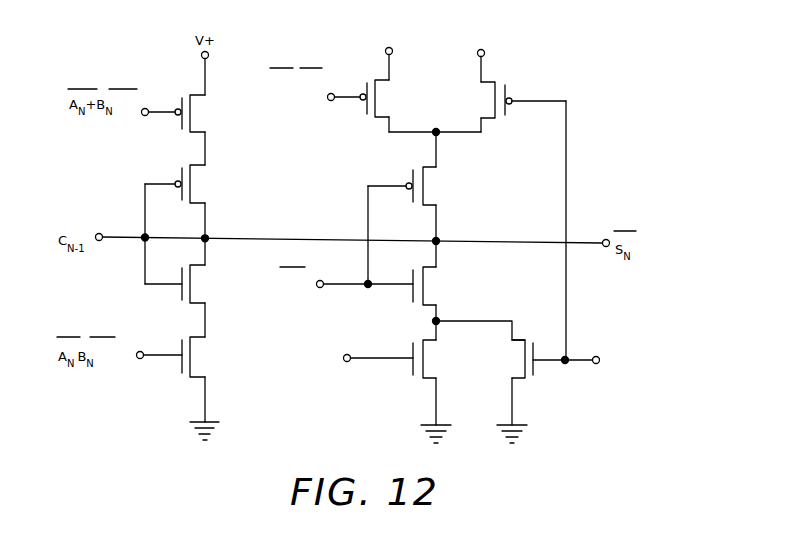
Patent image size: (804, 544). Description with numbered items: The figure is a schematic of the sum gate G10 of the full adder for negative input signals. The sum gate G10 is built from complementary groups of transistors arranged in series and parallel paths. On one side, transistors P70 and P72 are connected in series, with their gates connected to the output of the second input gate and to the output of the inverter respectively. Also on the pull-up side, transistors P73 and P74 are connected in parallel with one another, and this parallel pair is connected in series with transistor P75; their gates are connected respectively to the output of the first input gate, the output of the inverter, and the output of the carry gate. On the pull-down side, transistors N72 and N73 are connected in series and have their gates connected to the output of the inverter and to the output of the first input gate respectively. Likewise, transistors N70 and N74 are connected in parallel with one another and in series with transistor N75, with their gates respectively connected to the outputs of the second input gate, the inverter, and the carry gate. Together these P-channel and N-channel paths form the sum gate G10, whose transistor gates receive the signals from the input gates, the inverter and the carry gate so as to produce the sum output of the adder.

The transistor P70 is at (186, 113).
The transistor P72 is at (187, 184).
The transistor N72 is at (188, 284).
The transistor N73 is at (185, 357).
The transistor P73 is at (367, 98).
The transistor P74 is at (511, 100).
The transistor P75 is at (415, 186).
The transistor N75 is at (388, 287).
The transistor N70 is at (402, 359).
The transistor N74 is at (544, 359).
The sum gate G10 is at (554, 75).